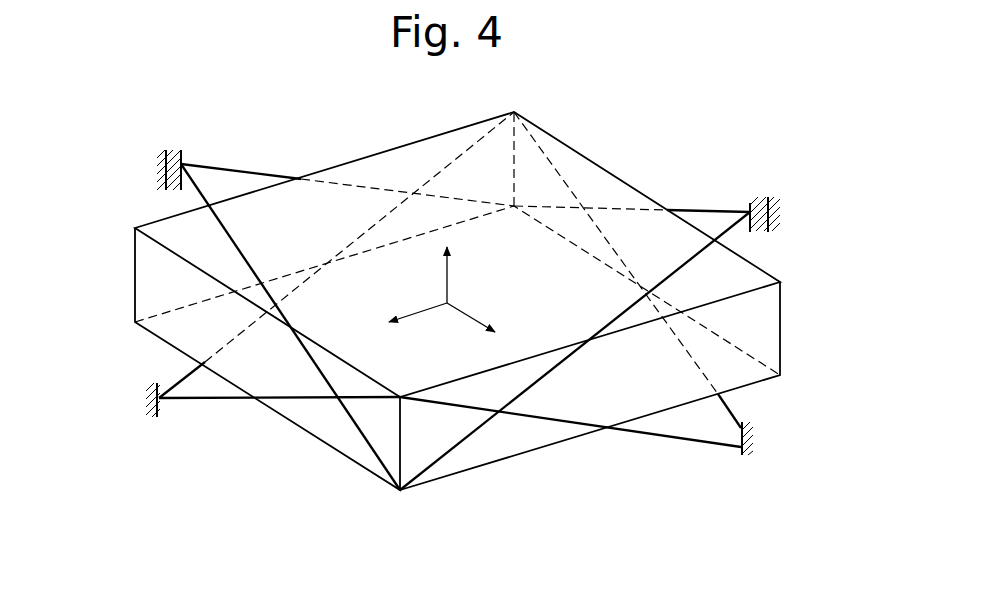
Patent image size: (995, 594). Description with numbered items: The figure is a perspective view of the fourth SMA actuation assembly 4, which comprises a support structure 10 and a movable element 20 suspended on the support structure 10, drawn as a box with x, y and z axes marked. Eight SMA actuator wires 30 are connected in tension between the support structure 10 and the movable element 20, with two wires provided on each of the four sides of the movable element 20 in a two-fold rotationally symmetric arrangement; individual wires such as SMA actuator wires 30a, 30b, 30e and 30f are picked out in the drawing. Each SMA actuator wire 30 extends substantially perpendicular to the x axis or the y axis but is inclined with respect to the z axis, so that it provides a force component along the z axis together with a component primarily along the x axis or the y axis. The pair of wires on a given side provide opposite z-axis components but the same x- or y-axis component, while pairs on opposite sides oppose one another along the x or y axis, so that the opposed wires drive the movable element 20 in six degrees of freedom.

The fourth SMA actuation assembly 4 is at (104, 277).
The support structure 10 is at (163, 170).
The movable element 20 is at (633, 190).
The SMA actuator wire 30 is at (360, 433).
The SMA actuator wire 30a is at (685, 440).
The SMA actuator wire 30b is at (443, 460).
The SMA actuator wire 30e is at (238, 170).
The SMA actuator wire 30f is at (457, 160).